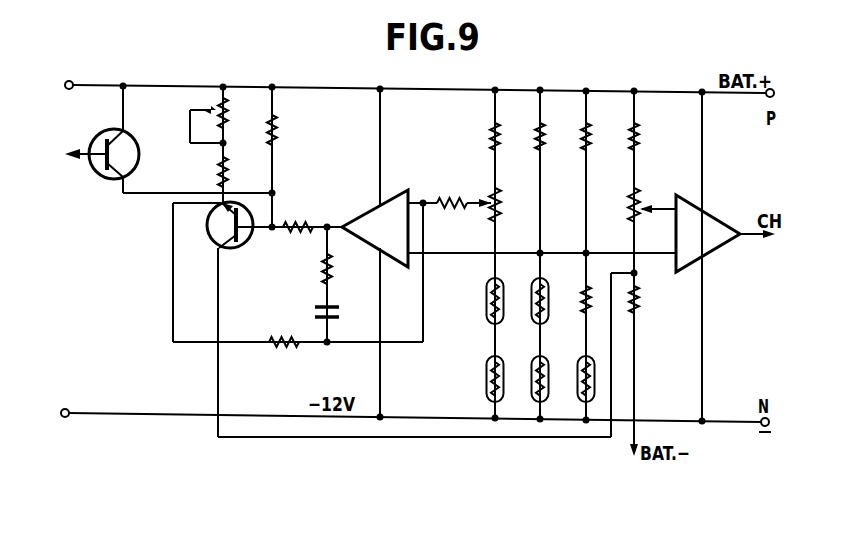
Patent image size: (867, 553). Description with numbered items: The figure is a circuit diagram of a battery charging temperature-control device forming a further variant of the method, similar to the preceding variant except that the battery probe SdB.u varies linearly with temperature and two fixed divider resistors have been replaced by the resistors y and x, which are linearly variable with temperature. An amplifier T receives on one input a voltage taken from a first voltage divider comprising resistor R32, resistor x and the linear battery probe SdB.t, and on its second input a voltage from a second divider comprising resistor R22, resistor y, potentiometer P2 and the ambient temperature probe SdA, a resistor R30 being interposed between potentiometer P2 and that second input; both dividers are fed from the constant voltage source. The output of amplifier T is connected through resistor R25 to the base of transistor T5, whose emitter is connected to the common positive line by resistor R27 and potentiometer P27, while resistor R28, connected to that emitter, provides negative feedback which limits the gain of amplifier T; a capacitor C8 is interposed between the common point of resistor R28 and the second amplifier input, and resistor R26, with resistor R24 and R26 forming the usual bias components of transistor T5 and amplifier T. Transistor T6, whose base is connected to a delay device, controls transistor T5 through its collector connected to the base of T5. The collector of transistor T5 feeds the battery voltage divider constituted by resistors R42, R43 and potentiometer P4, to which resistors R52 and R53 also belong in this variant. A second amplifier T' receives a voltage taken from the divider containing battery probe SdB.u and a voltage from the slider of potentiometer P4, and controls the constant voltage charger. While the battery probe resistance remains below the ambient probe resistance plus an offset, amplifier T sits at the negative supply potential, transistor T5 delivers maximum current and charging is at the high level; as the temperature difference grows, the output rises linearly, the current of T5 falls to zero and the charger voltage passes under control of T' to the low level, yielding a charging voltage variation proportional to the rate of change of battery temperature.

The transistor T6 is at (102, 131).
The transistor T5 is at (208, 235).
The potentiometer P27 is at (250, 120).
The resistor R24 is at (300, 124).
The resistor R27 is at (217, 173).
The resistor R25 is at (297, 198).
The resistor R26 is at (318, 273).
The capacitor C8 is at (340, 313).
The resistor R28 is at (274, 352).
The amplifier T is at (375, 221).
The resistor R30 is at (474, 178).
The potentiometer P2 is at (520, 212).
The potentiometer P4 is at (622, 205).
The resistor R22 is at (492, 128).
The resistor R32 is at (538, 130).
The resistor R52 is at (585, 132).
The resistor R42 is at (632, 132).
The resistor R53 is at (580, 295).
The resistor R43 is at (666, 322).
The resistor y is at (484, 309).
The resistor x is at (530, 310).
The ambient temperature probe SdA is at (478, 387).
The battery probe SdB.t is at (527, 383).
The battery probe SdB.u is at (578, 385).
The second amplifier T' is at (708, 226).